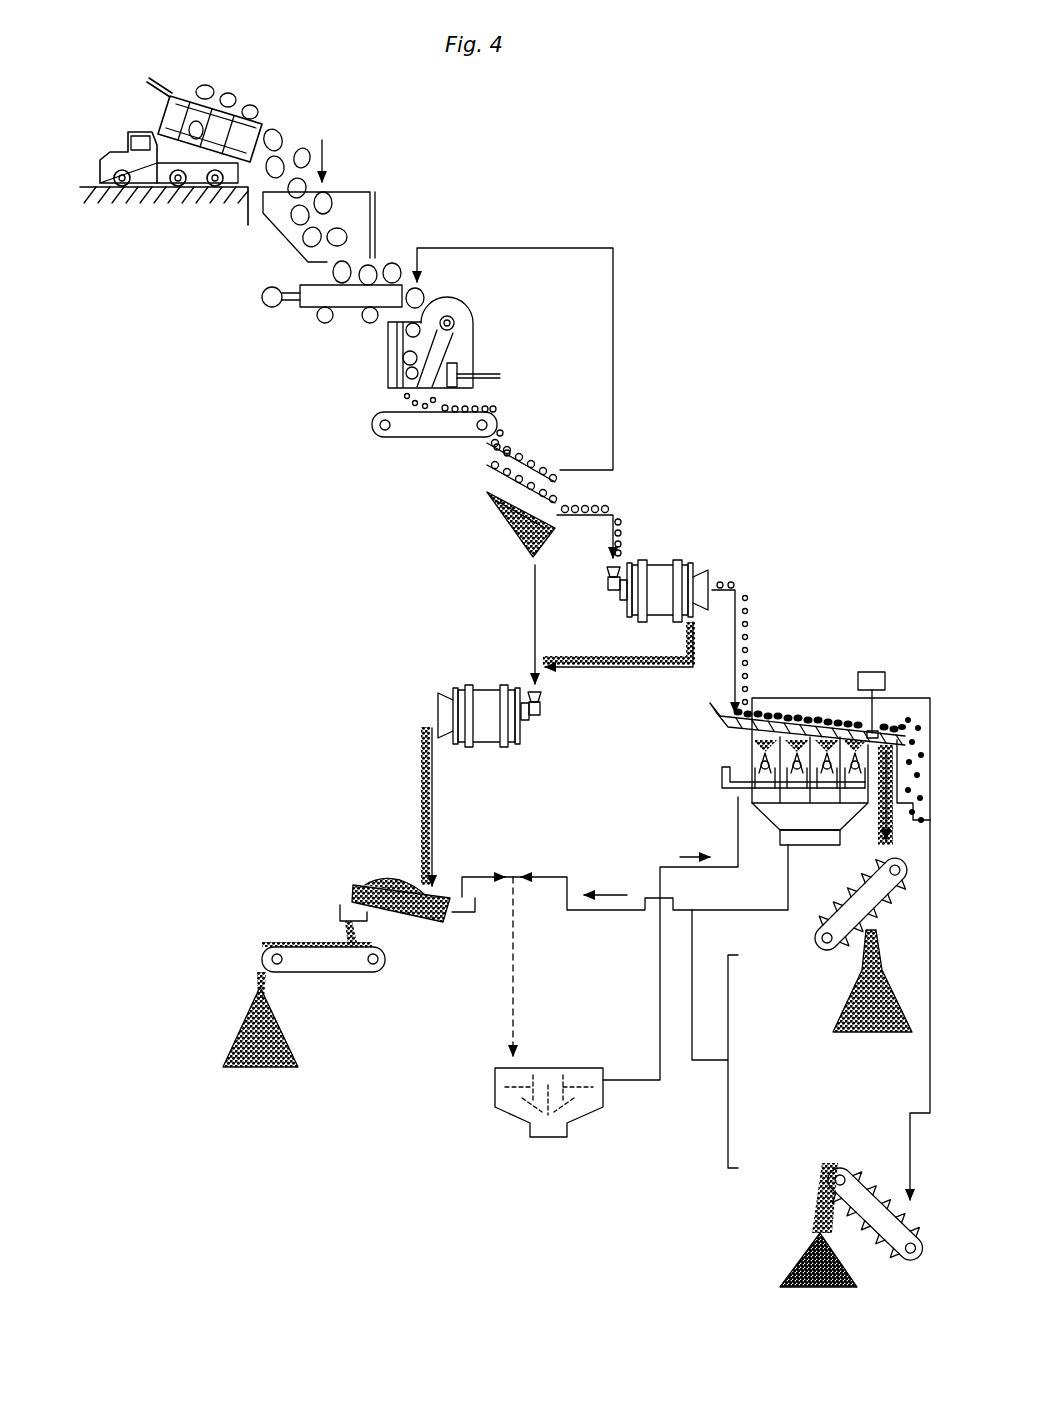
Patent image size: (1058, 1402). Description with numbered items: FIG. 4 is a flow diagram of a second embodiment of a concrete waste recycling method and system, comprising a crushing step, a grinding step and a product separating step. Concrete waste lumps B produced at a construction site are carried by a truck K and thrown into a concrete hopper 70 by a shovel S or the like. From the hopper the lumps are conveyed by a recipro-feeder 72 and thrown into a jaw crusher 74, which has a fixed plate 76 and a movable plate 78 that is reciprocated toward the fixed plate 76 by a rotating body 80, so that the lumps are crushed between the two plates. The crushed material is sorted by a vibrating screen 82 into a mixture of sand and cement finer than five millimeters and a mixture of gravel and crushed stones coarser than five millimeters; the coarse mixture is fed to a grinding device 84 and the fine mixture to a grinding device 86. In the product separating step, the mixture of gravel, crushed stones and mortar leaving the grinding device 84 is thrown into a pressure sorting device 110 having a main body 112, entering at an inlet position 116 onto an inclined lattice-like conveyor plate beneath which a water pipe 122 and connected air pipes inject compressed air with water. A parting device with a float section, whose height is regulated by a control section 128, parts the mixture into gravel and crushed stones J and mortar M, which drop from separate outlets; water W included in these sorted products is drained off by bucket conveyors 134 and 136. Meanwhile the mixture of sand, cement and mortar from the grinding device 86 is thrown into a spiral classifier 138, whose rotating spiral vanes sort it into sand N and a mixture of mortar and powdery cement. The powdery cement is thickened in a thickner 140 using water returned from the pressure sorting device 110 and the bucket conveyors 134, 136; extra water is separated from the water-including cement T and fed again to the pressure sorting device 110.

The concrete hopper 70 is at (356, 192).
The recipro-feeder 72 is at (308, 317).
The jaw crusher 74 is at (440, 329).
The fixed plate 76 is at (390, 381).
The movable plate 78 is at (438, 348).
The rotating body 80 is at (450, 295).
The vibrating screen 82 is at (470, 458).
The grinding device 84 is at (675, 552).
The grinding device 86 is at (475, 680).
The pressure sorting device 110 is at (801, 904).
The main body 112 is at (802, 698).
The inlet position 116 is at (750, 693).
The water pipe 122 is at (752, 773).
The control section 128 is at (878, 672).
The bucket conveyor 134 is at (818, 943).
The bucket conveyor 136 is at (918, 1260).
The spiral classifier 138 is at (345, 878).
The thickner 140 is at (543, 1127).
The concrete waste lumps B is at (207, 95).
The shovel S is at (268, 115).
The truck K is at (168, 140).
The sand N is at (277, 1033).
The mortar M is at (850, 1002).
The gravel and crushed stones J is at (800, 1247).
The water-including cement T is at (549, 1124).
The water W is at (647, 862).